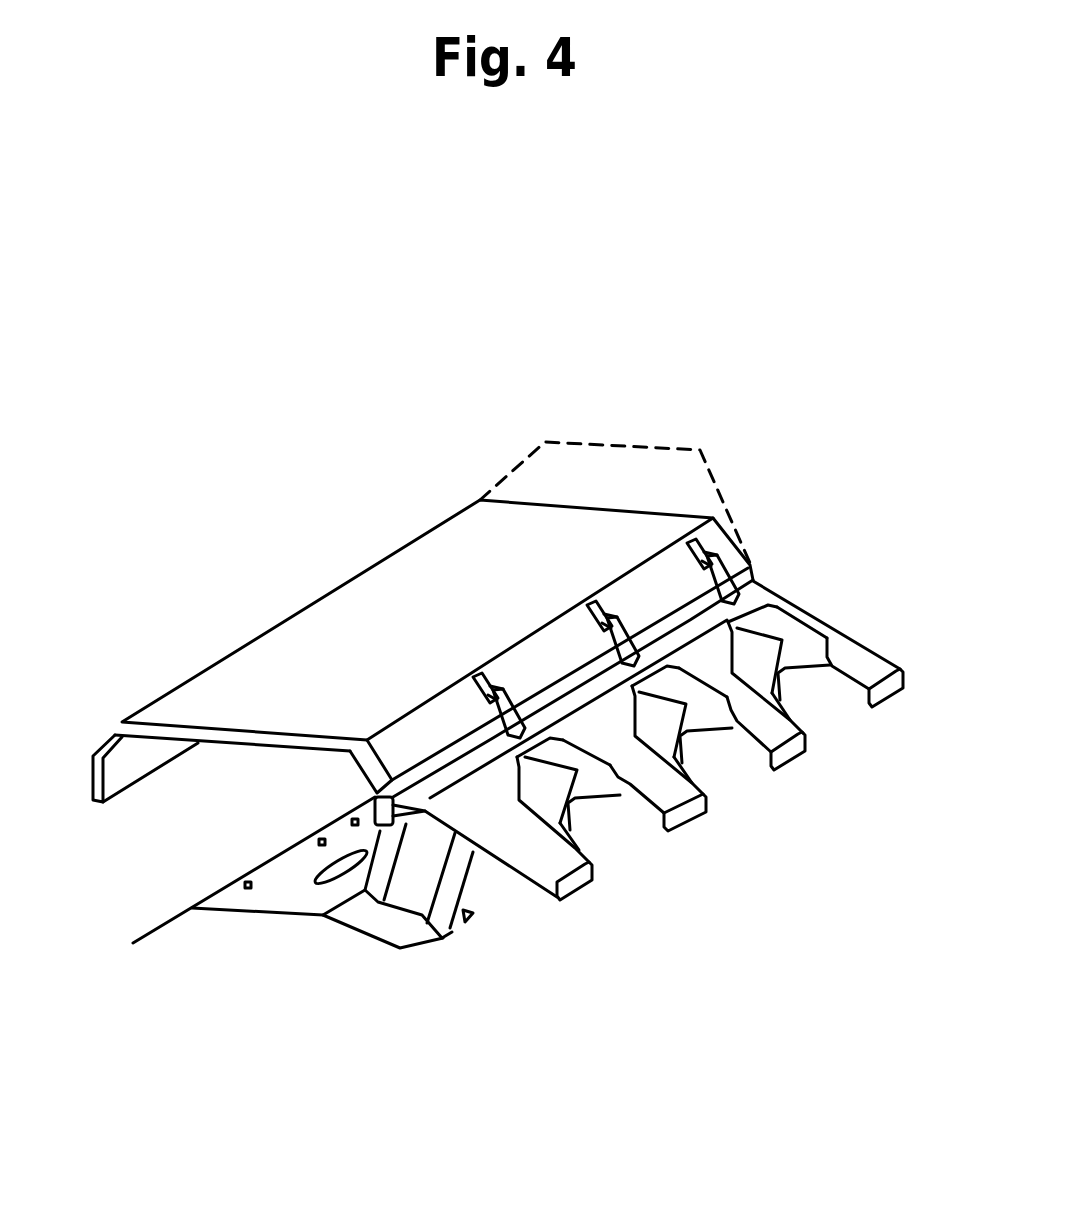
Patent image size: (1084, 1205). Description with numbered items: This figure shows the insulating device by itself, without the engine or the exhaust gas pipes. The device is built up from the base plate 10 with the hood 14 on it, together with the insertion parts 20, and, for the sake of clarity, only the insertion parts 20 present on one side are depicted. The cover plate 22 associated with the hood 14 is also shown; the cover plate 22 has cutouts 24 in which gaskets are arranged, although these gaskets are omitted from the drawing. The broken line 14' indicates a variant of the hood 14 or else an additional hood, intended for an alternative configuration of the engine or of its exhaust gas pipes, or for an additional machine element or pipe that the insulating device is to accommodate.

The base plate 10 is at (268, 892).
The hood 14 is at (423, 661).
The broken line 14' is at (615, 438).
The insertion parts 20 is at (410, 888).
The cover plate 22 is at (505, 823).
The cutouts 24 is at (600, 847).